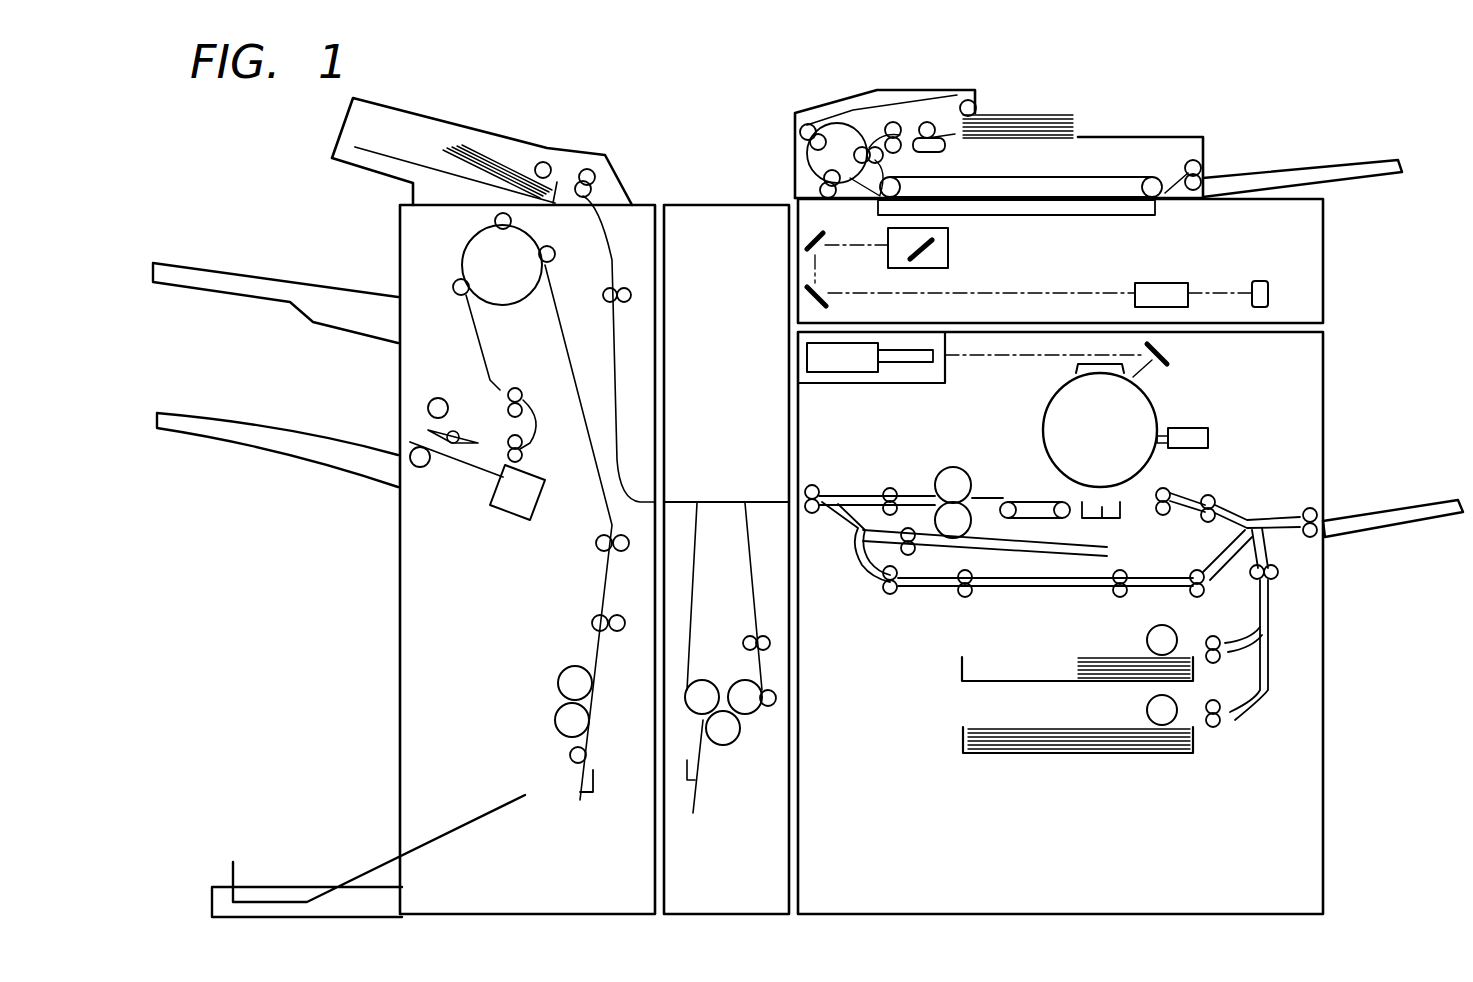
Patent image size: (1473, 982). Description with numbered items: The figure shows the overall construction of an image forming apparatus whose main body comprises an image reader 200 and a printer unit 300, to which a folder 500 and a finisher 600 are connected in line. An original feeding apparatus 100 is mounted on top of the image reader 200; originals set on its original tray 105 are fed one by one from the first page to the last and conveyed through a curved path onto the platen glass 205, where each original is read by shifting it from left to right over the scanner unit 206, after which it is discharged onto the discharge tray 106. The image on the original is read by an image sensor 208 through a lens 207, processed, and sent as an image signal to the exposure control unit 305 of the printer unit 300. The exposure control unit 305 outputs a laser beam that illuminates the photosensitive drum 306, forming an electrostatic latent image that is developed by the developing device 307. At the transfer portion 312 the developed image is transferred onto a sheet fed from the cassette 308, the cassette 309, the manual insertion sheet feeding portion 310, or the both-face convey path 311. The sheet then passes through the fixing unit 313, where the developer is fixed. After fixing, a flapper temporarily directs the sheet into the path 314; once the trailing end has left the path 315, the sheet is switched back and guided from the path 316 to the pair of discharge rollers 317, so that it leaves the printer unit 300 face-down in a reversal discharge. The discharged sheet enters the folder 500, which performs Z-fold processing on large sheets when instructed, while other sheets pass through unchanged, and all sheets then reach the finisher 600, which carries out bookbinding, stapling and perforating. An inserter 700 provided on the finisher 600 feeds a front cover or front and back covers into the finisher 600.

The original feeding apparatus 100 is at (926, 88).
The original tray 105 is at (1173, 135).
The discharge tray 106 is at (1361, 156).
The image reader 200 is at (1324, 228).
The platen glass 205 is at (1161, 215).
The scanner unit 206 is at (959, 240).
The lens 207 is at (1124, 282).
The image sensor 208 is at (1261, 278).
The printer unit 300 is at (1328, 759).
The exposure control unit 305 is at (920, 382).
The photosensitive drum 306 is at (1045, 404).
The developing device 307 is at (1194, 428).
The cassette 308 is at (959, 665).
The cassette 309 is at (961, 737).
The manual insertion sheet feeding portion 310 is at (1368, 534).
The both-face convey path 311 is at (919, 590).
The transfer portion 312 is at (1118, 520).
The fixing unit 313 is at (967, 477).
The path 314 is at (1030, 550).
The path 315 is at (864, 501).
The path 316 is at (850, 530).
The pair of discharge rollers 317 is at (814, 487).
The folder 500 is at (700, 202).
The finisher 600 is at (398, 558).
The inserter 700 is at (488, 132).